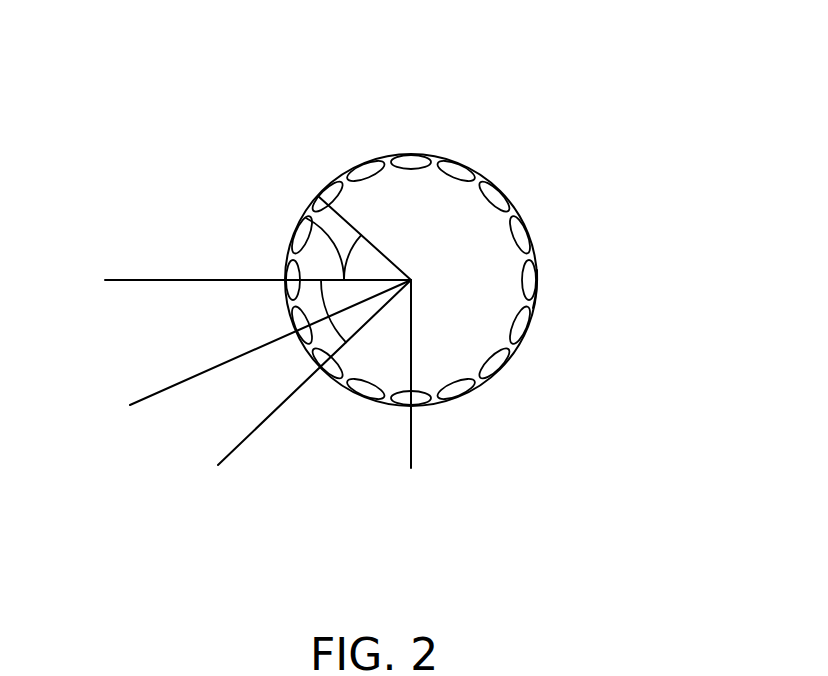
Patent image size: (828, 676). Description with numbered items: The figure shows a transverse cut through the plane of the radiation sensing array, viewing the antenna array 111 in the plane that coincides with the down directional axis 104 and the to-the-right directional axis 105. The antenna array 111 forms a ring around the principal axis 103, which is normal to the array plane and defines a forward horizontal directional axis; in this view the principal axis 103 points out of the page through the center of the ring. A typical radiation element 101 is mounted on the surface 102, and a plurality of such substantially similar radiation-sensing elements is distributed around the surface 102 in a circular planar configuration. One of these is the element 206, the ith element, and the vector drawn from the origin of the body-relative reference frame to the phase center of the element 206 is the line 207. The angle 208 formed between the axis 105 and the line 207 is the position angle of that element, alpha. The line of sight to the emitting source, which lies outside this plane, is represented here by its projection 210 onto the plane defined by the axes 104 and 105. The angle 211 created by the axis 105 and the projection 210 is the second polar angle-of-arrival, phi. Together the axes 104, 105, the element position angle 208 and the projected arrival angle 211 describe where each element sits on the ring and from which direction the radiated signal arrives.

The radiation element 101 is at (500, 370).
The surface 102 is at (535, 302).
The principal axis 103 is at (235, 358).
The down directional axis 104 is at (412, 420).
The to-the-right directional axis 105 is at (222, 280).
The antenna array 111 is at (485, 143).
The element 206 is at (327, 190).
The vector to phase center 207 is at (376, 248).
The position angle 208 is at (307, 213).
The projection of line-of-sight vector 210 is at (287, 398).
The second polar angle-of-arrival 211 is at (322, 362).